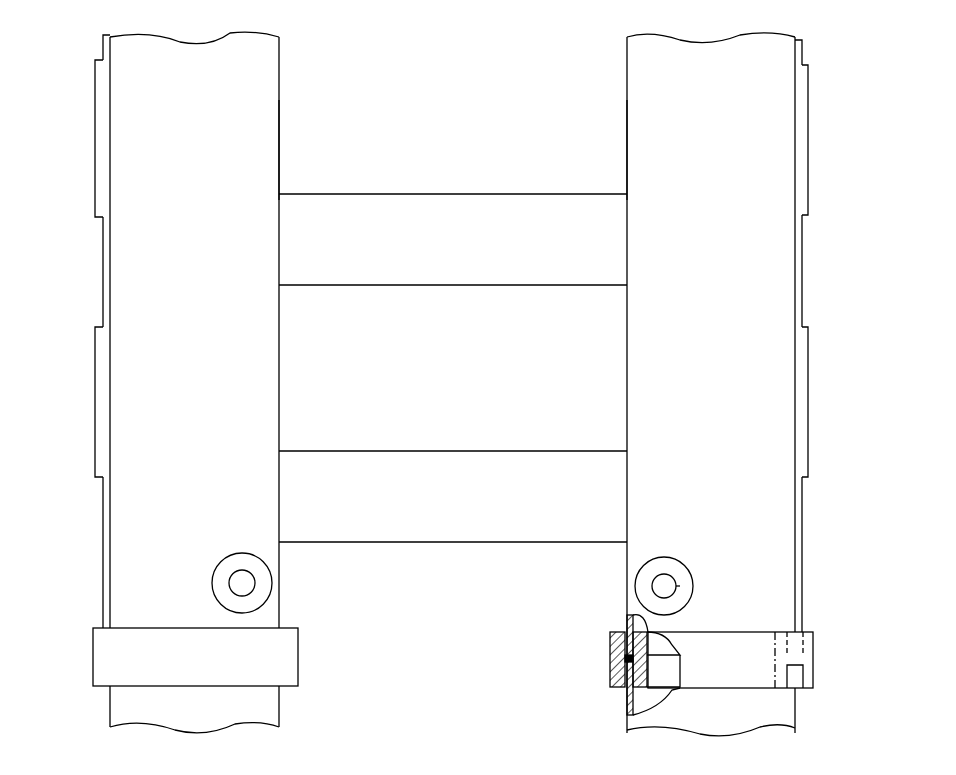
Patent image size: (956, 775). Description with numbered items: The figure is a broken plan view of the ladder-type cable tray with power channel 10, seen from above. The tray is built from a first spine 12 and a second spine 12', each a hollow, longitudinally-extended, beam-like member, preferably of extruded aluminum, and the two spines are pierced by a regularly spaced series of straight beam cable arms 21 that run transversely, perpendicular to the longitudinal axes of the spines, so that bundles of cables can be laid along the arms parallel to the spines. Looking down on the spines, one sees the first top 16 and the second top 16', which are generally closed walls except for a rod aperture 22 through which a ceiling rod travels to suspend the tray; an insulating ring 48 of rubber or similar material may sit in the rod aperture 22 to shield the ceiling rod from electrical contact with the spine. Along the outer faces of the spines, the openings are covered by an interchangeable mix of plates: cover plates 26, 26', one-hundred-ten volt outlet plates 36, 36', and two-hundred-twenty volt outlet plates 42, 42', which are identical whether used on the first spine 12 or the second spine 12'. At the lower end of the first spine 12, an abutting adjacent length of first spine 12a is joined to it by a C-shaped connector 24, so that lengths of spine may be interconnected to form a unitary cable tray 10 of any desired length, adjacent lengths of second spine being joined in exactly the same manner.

The ladder-type cable tray with power channel 10 is at (815, 40).
The first spine 12 is at (711, 370).
The second spine 12' is at (194, 369).
The first spine 12a is at (765, 716).
The first top 16 is at (587, 140).
The second top 16' is at (324, 140).
The cable arms 21 is at (453, 205).
The rod aperture 22 is at (660, 576).
The C-shaped connector 24 is at (610, 655).
The cover plate 26 is at (832, 336).
The cover plate 26' is at (79, 331).
The 110 V outlet plate 36 is at (836, 140).
The 110 V outlet plate 36' is at (72, 138).
The 220 V outlet plate 42 is at (836, 402).
The 220 V outlet plate 42' is at (72, 402).
The insulating ring 48 is at (680, 584).